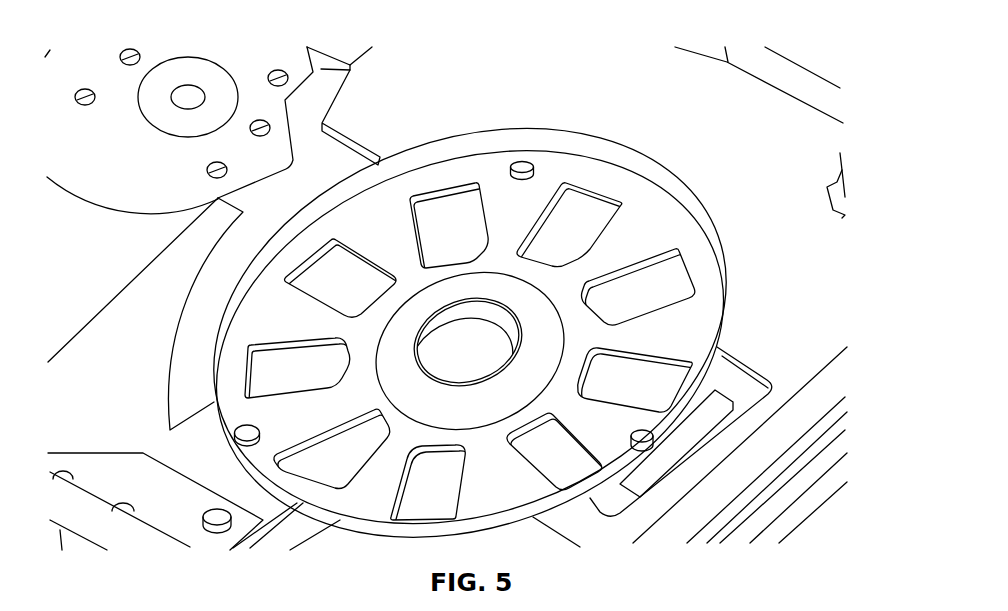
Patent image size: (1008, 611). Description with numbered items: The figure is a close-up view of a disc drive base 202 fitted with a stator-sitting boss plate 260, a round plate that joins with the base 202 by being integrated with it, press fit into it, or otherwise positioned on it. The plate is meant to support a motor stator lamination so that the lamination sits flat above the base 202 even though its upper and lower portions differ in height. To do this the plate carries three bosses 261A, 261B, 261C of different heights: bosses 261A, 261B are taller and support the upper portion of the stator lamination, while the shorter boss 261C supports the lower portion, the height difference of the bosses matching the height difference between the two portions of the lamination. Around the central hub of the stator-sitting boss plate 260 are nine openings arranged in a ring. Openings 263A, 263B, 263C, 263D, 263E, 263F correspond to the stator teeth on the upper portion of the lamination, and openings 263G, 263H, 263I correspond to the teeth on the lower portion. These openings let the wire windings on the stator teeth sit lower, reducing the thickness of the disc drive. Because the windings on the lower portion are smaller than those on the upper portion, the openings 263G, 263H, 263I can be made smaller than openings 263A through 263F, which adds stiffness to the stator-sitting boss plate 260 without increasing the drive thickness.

The base 202 is at (731, 163).
The stator-sitting boss plate 260 is at (384, 236).
The boss 261A is at (522, 163).
The boss 261B is at (643, 432).
The boss 261C is at (249, 437).
The opening 263A is at (473, 237).
The opening 263B is at (590, 244).
The opening 263C is at (659, 300).
The opening 263D is at (641, 387).
The opening 263E is at (567, 457).
The opening 263F is at (458, 487).
The opening 263G is at (352, 457).
The opening 263H is at (317, 379).
The opening 263I is at (360, 285).